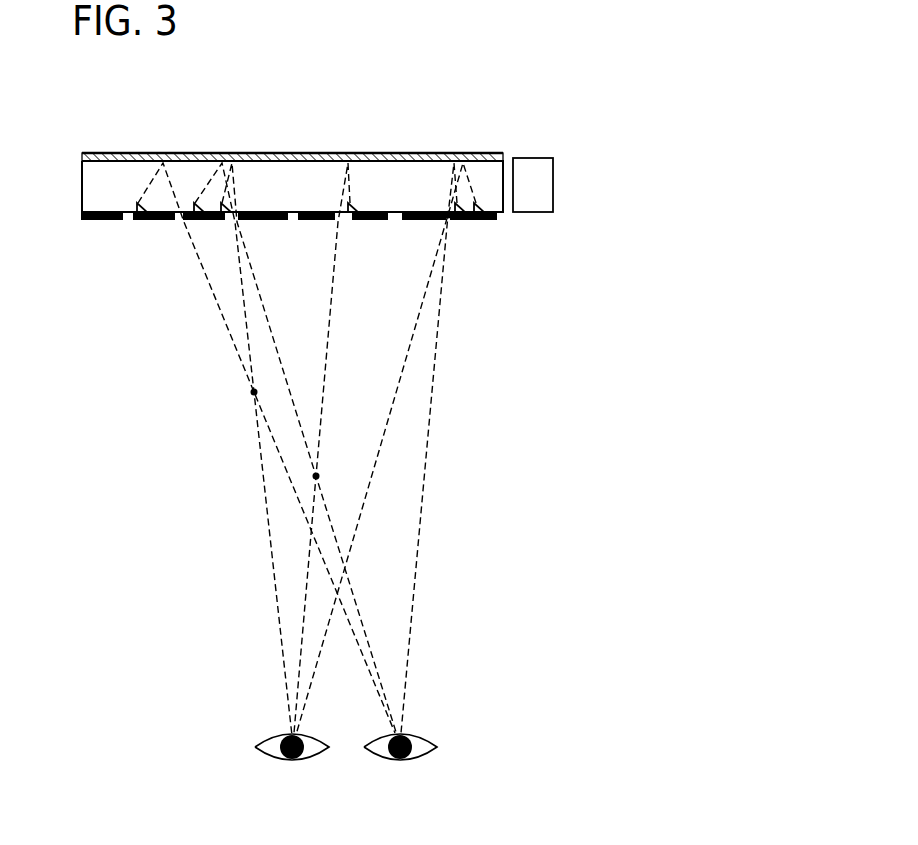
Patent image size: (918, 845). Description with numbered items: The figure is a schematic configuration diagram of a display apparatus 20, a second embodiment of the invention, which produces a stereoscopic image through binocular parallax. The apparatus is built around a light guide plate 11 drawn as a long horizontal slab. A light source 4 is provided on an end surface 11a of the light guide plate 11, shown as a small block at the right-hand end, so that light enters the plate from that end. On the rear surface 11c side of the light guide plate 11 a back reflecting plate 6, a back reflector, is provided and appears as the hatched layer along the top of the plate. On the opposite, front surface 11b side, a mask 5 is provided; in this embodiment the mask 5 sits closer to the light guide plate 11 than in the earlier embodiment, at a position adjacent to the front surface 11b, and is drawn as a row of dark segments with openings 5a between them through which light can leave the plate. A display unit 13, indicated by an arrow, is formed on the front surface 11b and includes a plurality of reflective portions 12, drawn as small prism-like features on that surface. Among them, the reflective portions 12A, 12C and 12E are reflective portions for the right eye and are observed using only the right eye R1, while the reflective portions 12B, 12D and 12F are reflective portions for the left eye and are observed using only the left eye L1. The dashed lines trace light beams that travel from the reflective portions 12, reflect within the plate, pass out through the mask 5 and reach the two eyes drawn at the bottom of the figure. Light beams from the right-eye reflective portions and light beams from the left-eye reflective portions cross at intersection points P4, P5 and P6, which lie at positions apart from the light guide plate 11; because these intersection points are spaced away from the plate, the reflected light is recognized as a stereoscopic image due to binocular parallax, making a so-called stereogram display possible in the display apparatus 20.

The display apparatus 20 is at (512, 115).
The back reflecting plate 6 is at (367, 153).
The light guide plate 11 is at (82, 190).
The rear surface 11c is at (430, 153).
The end surface 11a is at (503, 195).
The front surface 11b is at (128, 222).
The mask 5 is at (97, 222).
The opening of light shielding layer 5a is at (393, 222).
The display unit 13 is at (145, 305).
The reflective portions 12 is at (357, 284).
The reflective portion for the right eye 12A is at (458, 220).
The reflective portion for the left eye 12B is at (478, 220).
The reflective portion for the right eye 12C is at (197, 222).
The reflective portion for the left eye 12D is at (352, 225).
The reflective portion for the right eye 12E is at (145, 221).
The reflective portion for the left eye 12F is at (230, 222).
The light source 4 is at (553, 183).
The intersection point P4 is at (446, 217).
The intersection point P5 is at (320, 474).
The intersection point P6 is at (252, 392).
The left eye L1 is at (292, 760).
The right eye R1 is at (400, 760).